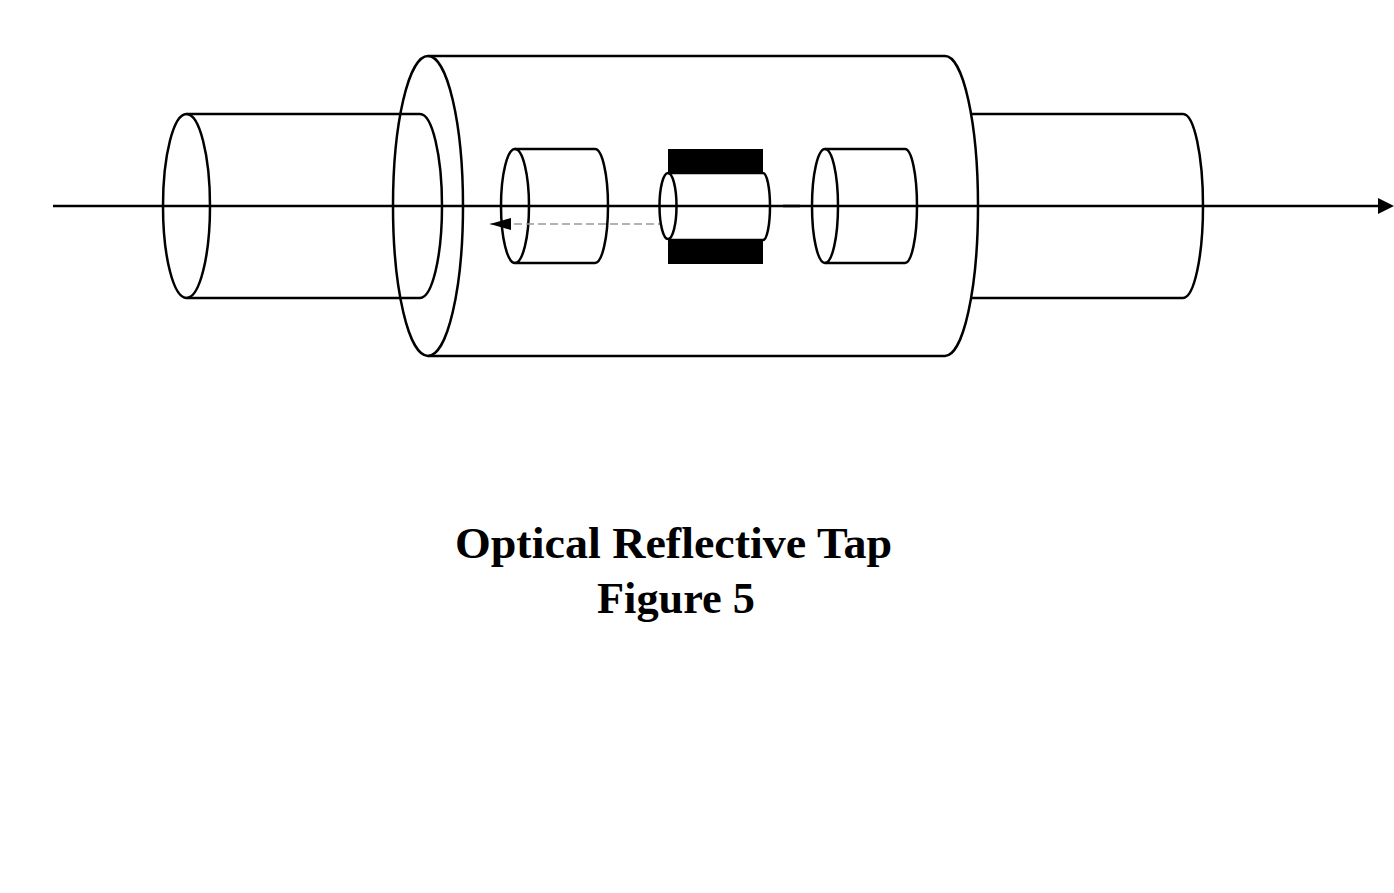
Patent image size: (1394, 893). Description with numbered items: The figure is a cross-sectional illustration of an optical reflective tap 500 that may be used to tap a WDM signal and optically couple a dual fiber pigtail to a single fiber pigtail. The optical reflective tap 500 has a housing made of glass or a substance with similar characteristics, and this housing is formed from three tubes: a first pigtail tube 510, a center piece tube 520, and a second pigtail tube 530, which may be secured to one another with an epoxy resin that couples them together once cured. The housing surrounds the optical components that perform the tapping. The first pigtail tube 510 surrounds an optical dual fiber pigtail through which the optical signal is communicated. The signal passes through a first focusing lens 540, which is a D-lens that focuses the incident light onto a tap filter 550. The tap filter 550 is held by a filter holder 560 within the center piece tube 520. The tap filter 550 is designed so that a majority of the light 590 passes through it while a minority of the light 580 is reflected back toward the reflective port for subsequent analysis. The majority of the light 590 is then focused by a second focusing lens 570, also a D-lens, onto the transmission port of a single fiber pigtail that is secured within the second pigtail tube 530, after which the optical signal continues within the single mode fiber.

The optical reflective tap 500 is at (723, 238).
The first pigtail tube 510 is at (227, 112).
The center piece tube 520 is at (427, 56).
The second pigtail tube 530 is at (1187, 113).
The first focusing lens 540 is at (557, 150).
The tap filter 550 is at (670, 193).
The filter holder 560 is at (750, 149).
The second focusing lens 570 is at (897, 149).
The minority of the light 580 is at (633, 224).
The majority of the light 590 is at (798, 206).